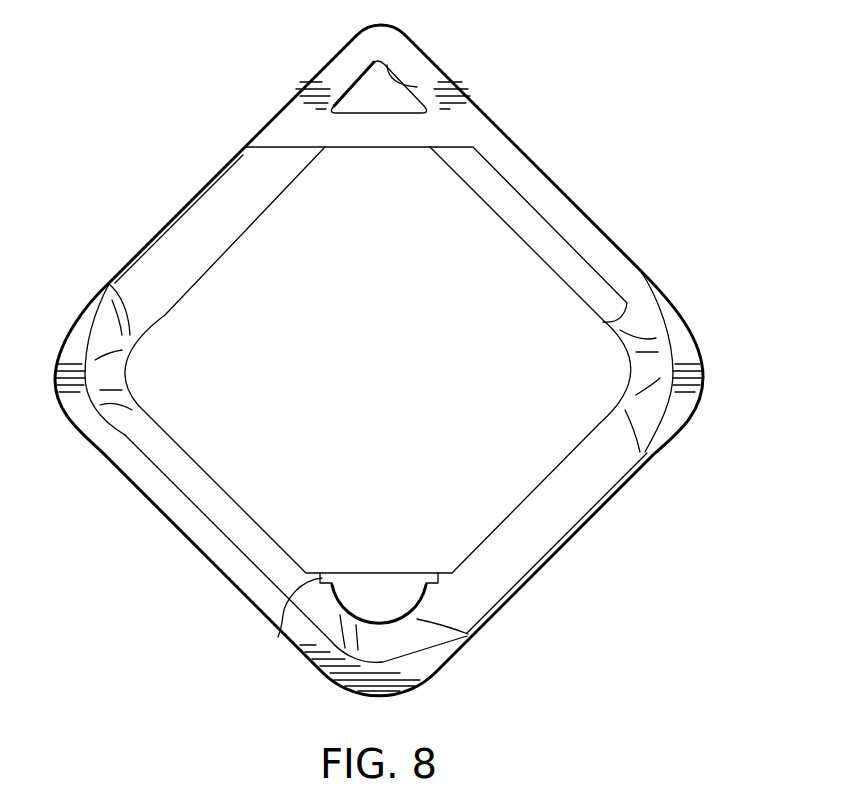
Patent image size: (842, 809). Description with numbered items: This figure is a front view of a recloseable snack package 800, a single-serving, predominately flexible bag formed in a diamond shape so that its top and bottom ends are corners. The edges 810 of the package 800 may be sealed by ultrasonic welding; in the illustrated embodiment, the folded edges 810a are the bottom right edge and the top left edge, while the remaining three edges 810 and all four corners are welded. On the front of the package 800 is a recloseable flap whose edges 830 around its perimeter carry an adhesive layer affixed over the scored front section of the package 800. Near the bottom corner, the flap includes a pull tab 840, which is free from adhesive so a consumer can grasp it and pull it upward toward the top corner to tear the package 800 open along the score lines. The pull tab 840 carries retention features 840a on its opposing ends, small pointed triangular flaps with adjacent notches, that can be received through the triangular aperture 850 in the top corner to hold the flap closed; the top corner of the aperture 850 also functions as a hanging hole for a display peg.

The recloseable snack package 800 is at (182, 90).
The edges 810 is at (614, 198).
The folded edges 810a is at (160, 218).
The edges of the flap 830 is at (605, 320).
The pull tab 840 is at (390, 623).
The retention features 840a is at (278, 637).
The aperture 850 is at (413, 87).